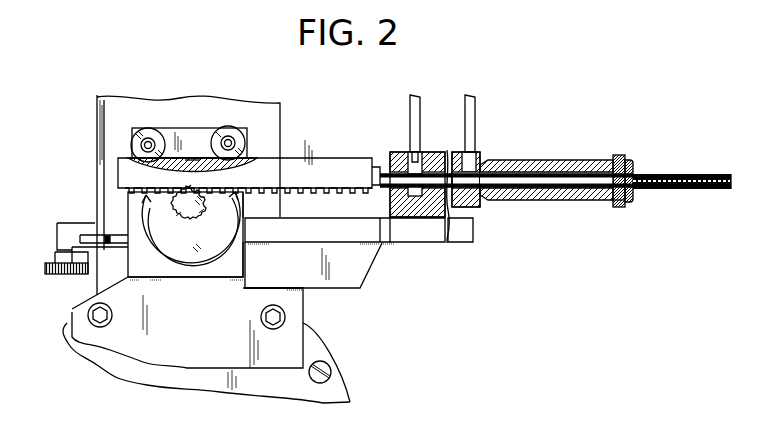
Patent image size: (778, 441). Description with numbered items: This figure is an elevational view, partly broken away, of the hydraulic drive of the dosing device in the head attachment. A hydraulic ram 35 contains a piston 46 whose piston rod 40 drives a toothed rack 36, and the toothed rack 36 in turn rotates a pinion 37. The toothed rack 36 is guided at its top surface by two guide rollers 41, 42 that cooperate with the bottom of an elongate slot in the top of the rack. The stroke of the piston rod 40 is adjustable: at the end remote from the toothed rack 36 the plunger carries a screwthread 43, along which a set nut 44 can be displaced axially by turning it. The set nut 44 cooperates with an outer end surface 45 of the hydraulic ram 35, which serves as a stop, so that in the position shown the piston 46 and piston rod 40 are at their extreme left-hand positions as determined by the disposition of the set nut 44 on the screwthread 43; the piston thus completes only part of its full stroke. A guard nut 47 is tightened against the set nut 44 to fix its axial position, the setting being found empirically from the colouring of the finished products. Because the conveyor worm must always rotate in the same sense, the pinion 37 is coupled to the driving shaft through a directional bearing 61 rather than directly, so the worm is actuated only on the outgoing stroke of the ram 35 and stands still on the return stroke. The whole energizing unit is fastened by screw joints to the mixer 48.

The hydraulic ram 35 is at (433, 150).
The toothed rack 36 is at (318, 165).
The pinion 37 is at (168, 203).
The piston rod 40 is at (390, 153).
The guide roller 41 is at (148, 130).
The guide roller 42 is at (228, 130).
The screwthread 43 is at (192, 158).
The set nut 44 is at (618, 155).
The outer end surface 45 is at (610, 203).
The piston 46 is at (447, 157).
The guard nut 47 is at (635, 163).
The mixer 48 is at (312, 349).
The directional bearing 61 is at (158, 232).